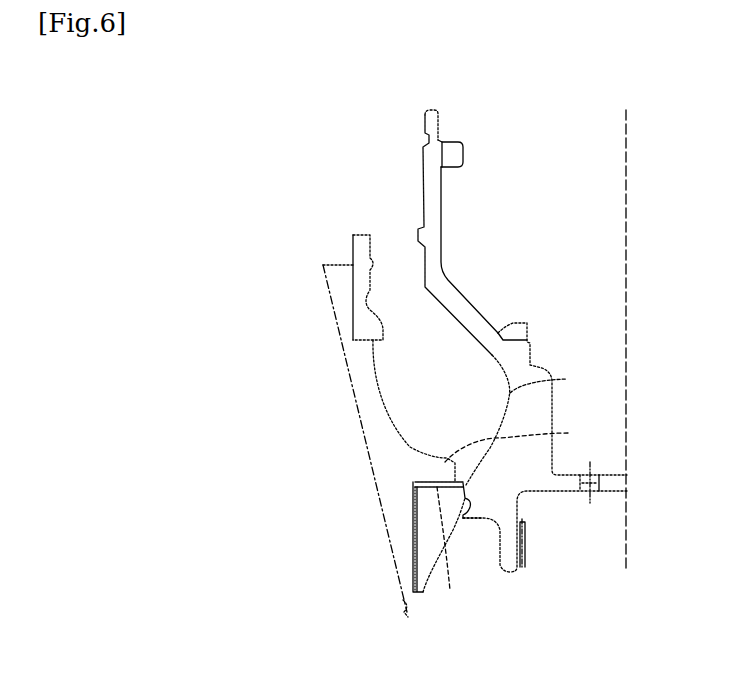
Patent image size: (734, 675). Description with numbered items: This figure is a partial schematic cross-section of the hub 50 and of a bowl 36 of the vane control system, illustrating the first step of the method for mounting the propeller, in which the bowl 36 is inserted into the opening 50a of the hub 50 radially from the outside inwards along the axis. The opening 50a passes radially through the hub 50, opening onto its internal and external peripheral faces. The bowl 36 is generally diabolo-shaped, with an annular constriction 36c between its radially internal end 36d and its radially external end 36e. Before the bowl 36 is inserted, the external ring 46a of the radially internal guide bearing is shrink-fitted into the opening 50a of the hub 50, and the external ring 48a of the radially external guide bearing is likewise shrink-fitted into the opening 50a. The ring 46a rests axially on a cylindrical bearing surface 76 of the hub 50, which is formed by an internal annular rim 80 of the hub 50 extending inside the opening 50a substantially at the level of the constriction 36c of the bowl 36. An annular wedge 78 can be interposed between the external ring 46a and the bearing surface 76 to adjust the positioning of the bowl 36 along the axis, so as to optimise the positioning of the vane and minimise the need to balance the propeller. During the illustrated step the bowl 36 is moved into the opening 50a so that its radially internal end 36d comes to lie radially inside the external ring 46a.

The bowl 36 is at (497, 320).
The radially external end 36e is at (444, 144).
The annular constriction 36c is at (551, 383).
The radially internal end 36d is at (483, 517).
The hub 50 is at (355, 410).
The opening 50a is at (416, 411).
The external ring 48a is at (360, 322).
The cylindrical bearing surface 76 is at (517, 445).
The annular wedge 78 is at (447, 551).
The internal annular rim 80 is at (425, 467).
The external ring 46a is at (425, 537).